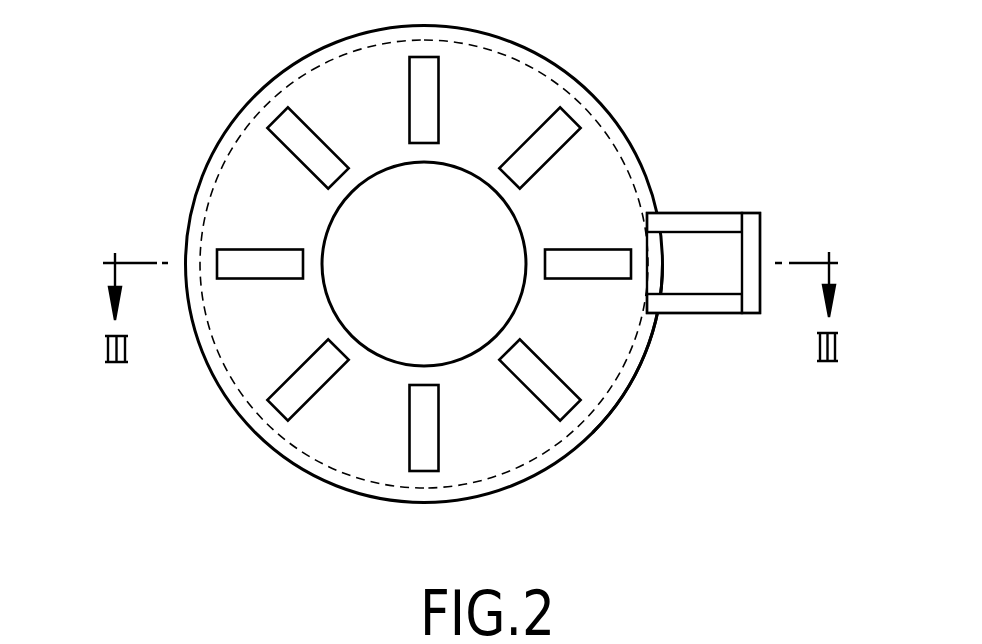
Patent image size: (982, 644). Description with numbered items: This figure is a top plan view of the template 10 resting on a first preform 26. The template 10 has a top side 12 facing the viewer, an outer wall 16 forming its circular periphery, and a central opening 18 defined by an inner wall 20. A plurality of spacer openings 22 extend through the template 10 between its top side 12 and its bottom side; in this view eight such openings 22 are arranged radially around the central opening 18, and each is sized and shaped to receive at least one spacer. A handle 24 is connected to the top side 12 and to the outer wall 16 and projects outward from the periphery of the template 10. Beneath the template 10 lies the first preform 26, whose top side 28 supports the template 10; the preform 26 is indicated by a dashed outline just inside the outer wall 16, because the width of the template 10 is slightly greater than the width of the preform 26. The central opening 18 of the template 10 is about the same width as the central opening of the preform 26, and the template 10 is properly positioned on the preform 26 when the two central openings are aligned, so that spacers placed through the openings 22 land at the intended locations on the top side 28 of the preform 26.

The template 10 is at (627, 128).
The top side 12 is at (537, 98).
The outer wall 16 is at (640, 375).
The central opening 18 is at (383, 200).
The inner wall 20 is at (510, 320).
The spacer openings 22 is at (427, 73).
The handle 24 is at (760, 230).
The first preform 26 is at (507, 472).
The top side 28 is at (340, 432).